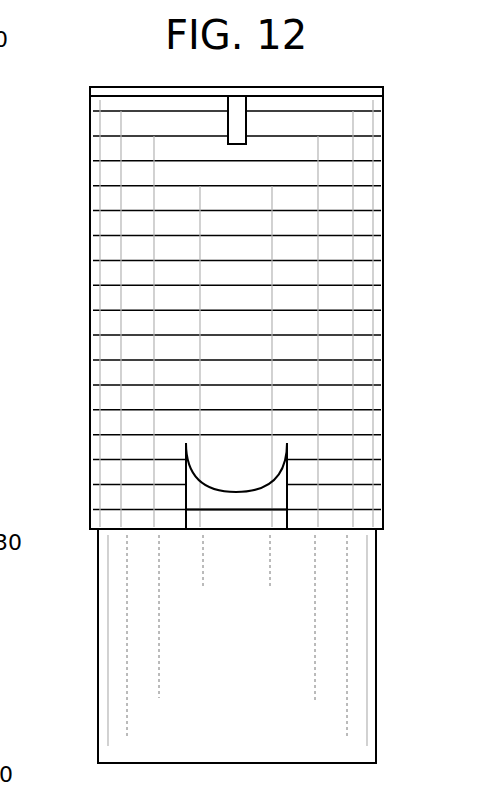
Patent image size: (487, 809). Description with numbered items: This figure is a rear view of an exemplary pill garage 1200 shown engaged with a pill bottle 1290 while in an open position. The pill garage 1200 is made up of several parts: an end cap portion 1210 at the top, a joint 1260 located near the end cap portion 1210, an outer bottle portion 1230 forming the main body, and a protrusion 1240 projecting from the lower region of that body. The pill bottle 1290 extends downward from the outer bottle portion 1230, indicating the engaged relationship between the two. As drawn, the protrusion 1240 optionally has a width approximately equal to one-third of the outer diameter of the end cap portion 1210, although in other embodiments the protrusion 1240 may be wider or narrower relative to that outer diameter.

The pill garage 1200 is at (396, 84).
The end cap portion 1210 is at (90, 88).
The outer bottle portion 1230 is at (90, 198).
The protrusion 1240 is at (232, 520).
The joint 1260 is at (238, 127).
The pill bottle 1290 is at (376, 764).